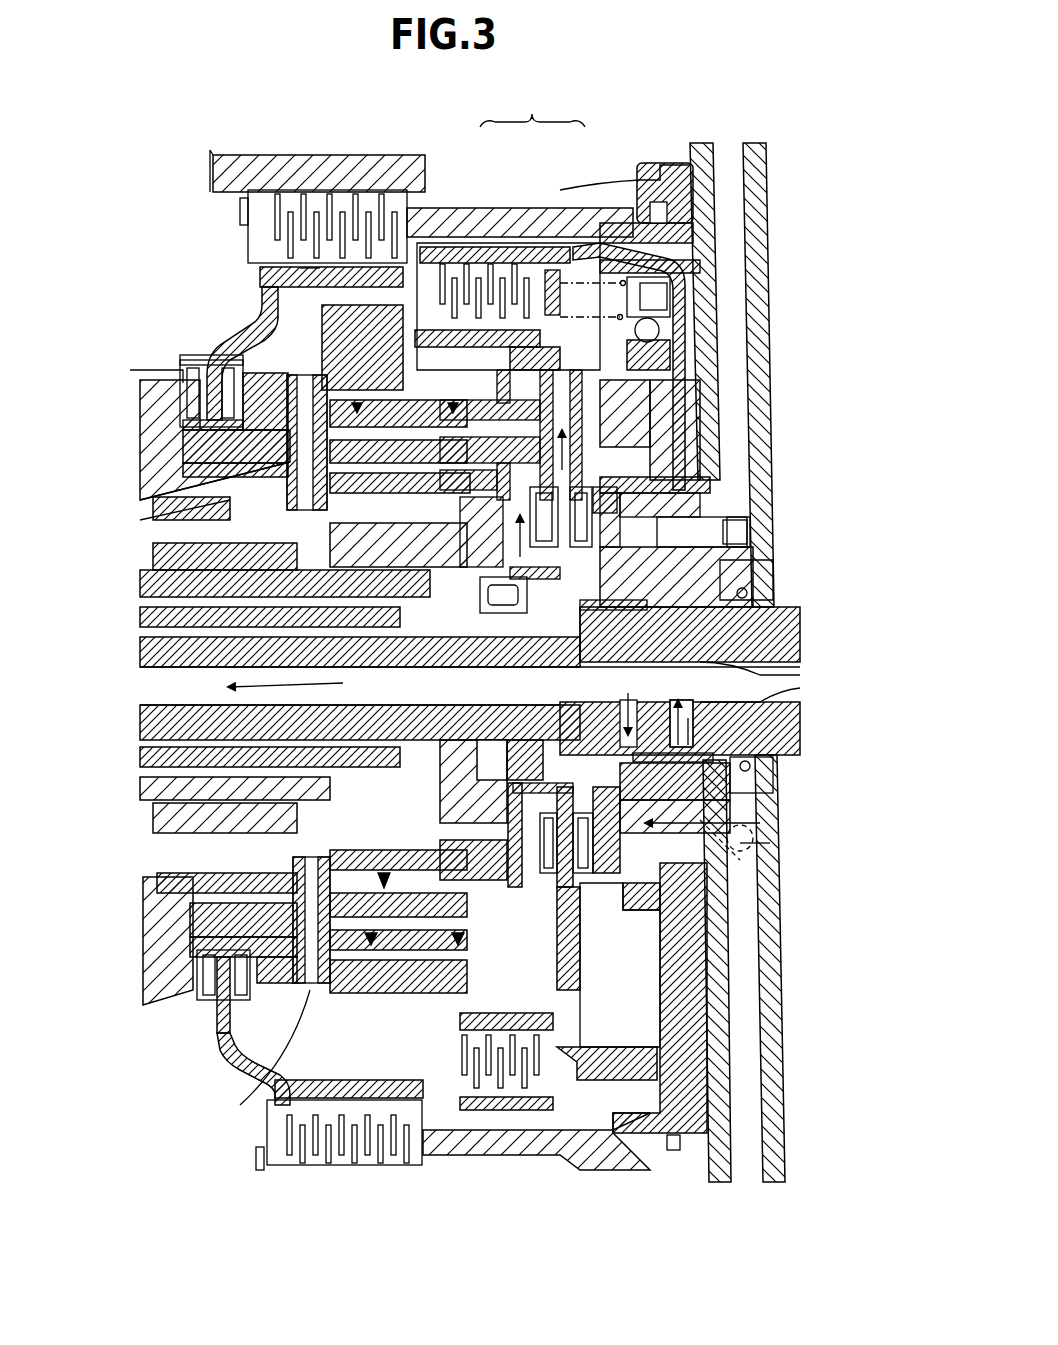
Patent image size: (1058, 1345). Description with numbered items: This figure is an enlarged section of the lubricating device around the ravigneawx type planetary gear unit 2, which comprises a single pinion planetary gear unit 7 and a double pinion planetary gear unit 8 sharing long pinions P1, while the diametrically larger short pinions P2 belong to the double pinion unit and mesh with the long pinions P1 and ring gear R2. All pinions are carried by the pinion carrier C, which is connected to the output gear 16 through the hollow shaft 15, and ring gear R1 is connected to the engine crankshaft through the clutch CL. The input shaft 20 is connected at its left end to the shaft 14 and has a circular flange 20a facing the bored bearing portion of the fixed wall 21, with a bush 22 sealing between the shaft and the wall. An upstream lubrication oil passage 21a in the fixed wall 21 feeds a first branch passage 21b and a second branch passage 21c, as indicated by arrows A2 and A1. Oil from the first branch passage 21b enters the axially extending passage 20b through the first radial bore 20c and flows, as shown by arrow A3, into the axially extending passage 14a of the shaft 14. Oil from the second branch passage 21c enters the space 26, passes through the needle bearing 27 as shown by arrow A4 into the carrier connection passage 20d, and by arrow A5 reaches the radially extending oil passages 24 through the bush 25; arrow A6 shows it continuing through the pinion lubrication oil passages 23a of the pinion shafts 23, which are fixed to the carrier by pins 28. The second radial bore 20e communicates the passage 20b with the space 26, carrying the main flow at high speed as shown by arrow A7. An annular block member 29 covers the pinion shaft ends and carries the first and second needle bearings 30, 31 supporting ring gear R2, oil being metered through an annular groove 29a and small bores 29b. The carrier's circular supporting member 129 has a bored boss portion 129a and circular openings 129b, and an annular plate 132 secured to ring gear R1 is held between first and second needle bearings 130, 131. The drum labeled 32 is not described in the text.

The ravigneawx type planetary gear unit 2 is at (532, 107).
The single pinion planetary gear unit 7 is at (528, 262).
The double pinion planetary gear unit 8 is at (423, 278).
The shaft 14 is at (268, 621).
The axially extending passage 14a is at (310, 668).
The hollow shaft 15 is at (190, 492).
The output gear 16 is at (180, 490).
The input shaft 20 is at (748, 595).
The circular flange 20a is at (660, 500).
The axially extending passage 20b is at (720, 640).
The first radial bore 20c is at (762, 760).
The carrier connection passage 20d is at (403, 682).
The second radial bore 20e is at (745, 675).
The fixed wall 21 is at (693, 1140).
The upstream lubrication oil passage 21a is at (778, 1060).
The first branch passage 21b is at (760, 853).
The second branch passage 21c is at (640, 925).
The bush 22 is at (750, 790).
The pinion shaft 23 is at (330, 545).
The pinion lubrication oil passage 23a is at (322, 300).
The radially extending oil passage 24 is at (330, 518).
The bush 25 is at (640, 525).
The space 26 is at (604, 855).
The needle bearing 27 is at (660, 553).
The pin 28 is at (265, 385).
The annular block member 29 is at (200, 350).
The annular groove 29a is at (285, 452).
The small bores 29b is at (235, 422).
The first needle bearing 30 is at (215, 395).
The second needle bearing 31 is at (185, 360).
The clutch drum 32 is at (262, 300).
The circular supporting member 129 is at (700, 398).
The bored boss portion 129a is at (745, 575).
The circular openings 129b is at (690, 350).
The first needle bearing 130 is at (700, 425).
The second needle bearing 131 is at (700, 458).
The annular plate 132 is at (700, 376).
The arrow A1 is at (772, 848).
The arrow A2 is at (695, 738).
The arrow A3 is at (215, 690).
The arrow A4 is at (735, 860).
The arrow A5 is at (643, 680).
The arrow A6 is at (550, 385).
The arrow A7 is at (690, 712).
The pinion carrier C is at (575, 350).
The clutch CL is at (573, 197).
The long pinions P1 is at (395, 985).
The short pinions P2 is at (345, 330).
The ring gear R1 is at (625, 283).
The ring gear R2 is at (300, 268).